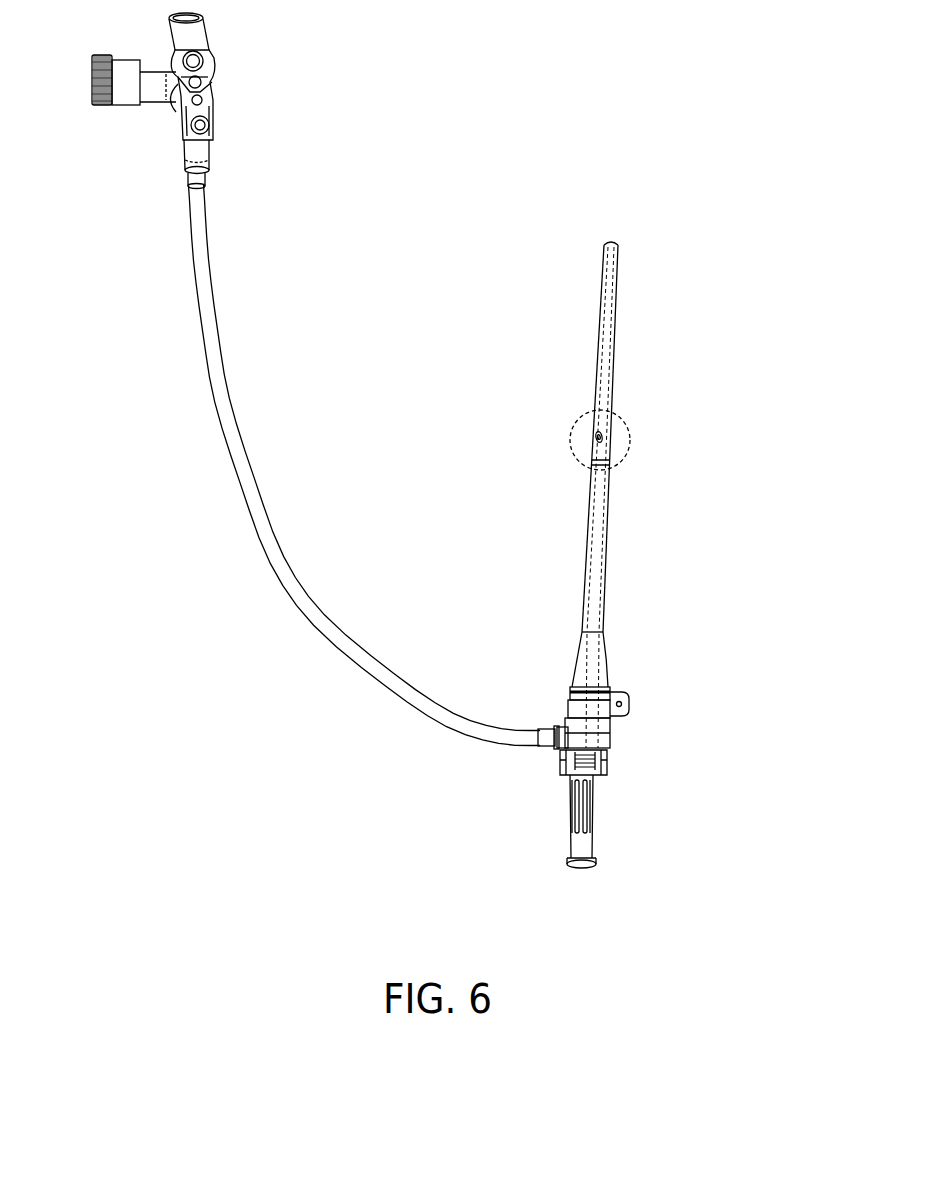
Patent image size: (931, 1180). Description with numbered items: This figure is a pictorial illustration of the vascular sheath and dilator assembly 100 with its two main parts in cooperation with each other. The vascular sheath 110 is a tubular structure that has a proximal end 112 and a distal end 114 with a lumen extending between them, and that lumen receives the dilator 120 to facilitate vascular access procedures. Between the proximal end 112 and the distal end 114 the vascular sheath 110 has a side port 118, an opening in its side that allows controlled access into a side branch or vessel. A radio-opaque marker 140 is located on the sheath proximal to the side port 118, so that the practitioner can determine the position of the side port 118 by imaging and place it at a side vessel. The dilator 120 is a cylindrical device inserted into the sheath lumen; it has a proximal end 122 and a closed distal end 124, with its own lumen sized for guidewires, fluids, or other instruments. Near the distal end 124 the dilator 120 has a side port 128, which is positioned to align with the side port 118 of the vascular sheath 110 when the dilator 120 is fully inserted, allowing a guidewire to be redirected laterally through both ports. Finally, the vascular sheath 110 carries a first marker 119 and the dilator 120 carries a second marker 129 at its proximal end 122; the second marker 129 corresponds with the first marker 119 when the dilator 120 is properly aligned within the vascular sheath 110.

The vascular sheath and dilator assembly 100 is at (482, 66).
The vascular sheath 110 is at (616, 524).
The proximal end 112 is at (612, 772).
The distal end 114 is at (612, 243).
The side port 118 is at (593, 450).
The first marker 119 is at (565, 724).
The dilator 120 is at (612, 742).
The proximal end 122 is at (600, 860).
The distal end 124 is at (609, 332).
The side port 128 is at (593, 437).
The second marker 129 is at (562, 768).
The radio-opaque marker 140 is at (608, 463).